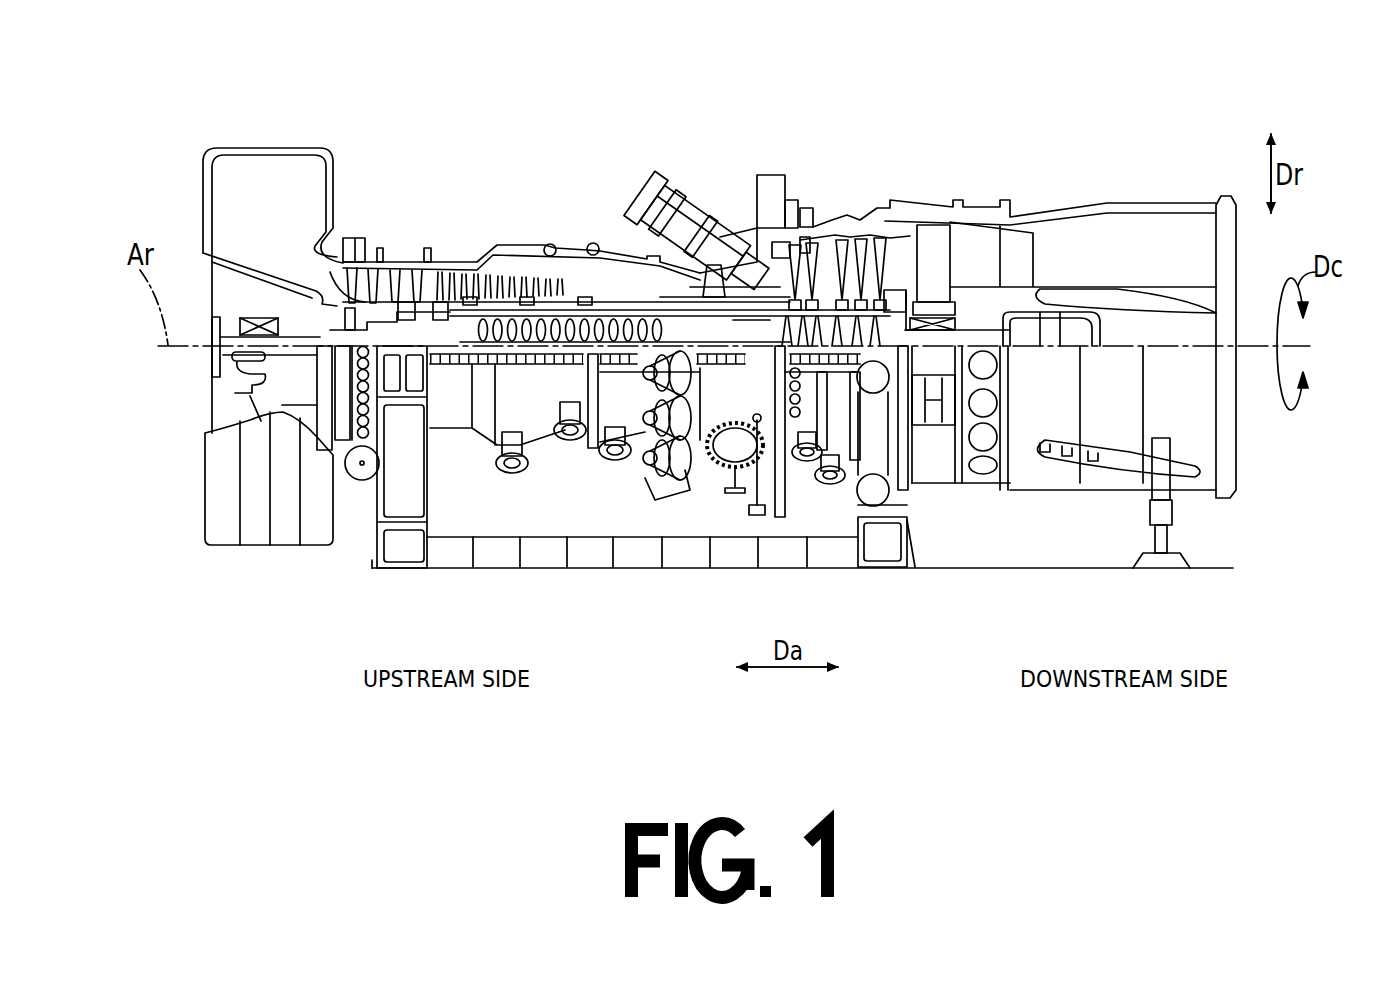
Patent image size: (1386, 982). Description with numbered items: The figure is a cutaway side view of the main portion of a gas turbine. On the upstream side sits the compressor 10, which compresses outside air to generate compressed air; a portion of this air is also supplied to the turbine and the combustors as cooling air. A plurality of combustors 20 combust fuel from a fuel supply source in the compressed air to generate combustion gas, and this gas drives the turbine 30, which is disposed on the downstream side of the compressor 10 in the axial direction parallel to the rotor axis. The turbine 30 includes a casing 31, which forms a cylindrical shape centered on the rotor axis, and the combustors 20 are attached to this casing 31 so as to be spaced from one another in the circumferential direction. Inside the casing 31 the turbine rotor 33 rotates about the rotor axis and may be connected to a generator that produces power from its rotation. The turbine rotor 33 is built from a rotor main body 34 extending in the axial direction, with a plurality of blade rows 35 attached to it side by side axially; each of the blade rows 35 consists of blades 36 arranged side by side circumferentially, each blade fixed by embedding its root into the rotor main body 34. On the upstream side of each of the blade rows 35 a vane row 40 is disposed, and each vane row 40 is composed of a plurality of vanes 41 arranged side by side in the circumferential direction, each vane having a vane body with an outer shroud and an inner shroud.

The compressor 10 is at (453, 247).
The combustors 20 is at (645, 187).
The turbine 30 is at (1018, 313).
The casing 31 is at (875, 197).
The turbine rotor 33 is at (819, 186).
The rotor main body 34 is at (829, 266).
The blade rows 35 is at (819, 192).
The blades 36 is at (818, 262).
The vane row 40 is at (730, 187).
The vanes 41 is at (740, 266).